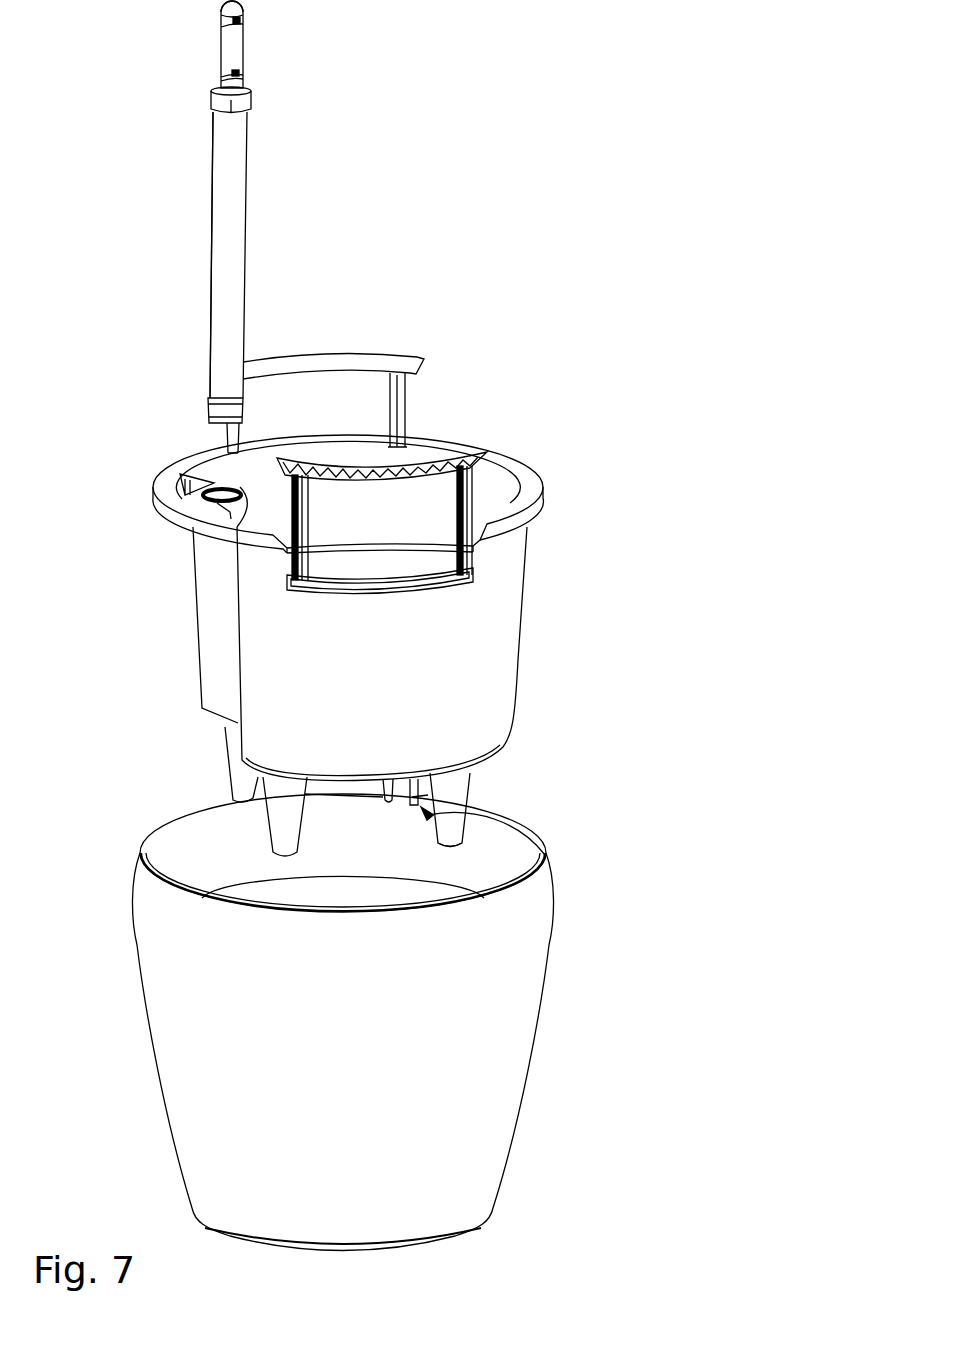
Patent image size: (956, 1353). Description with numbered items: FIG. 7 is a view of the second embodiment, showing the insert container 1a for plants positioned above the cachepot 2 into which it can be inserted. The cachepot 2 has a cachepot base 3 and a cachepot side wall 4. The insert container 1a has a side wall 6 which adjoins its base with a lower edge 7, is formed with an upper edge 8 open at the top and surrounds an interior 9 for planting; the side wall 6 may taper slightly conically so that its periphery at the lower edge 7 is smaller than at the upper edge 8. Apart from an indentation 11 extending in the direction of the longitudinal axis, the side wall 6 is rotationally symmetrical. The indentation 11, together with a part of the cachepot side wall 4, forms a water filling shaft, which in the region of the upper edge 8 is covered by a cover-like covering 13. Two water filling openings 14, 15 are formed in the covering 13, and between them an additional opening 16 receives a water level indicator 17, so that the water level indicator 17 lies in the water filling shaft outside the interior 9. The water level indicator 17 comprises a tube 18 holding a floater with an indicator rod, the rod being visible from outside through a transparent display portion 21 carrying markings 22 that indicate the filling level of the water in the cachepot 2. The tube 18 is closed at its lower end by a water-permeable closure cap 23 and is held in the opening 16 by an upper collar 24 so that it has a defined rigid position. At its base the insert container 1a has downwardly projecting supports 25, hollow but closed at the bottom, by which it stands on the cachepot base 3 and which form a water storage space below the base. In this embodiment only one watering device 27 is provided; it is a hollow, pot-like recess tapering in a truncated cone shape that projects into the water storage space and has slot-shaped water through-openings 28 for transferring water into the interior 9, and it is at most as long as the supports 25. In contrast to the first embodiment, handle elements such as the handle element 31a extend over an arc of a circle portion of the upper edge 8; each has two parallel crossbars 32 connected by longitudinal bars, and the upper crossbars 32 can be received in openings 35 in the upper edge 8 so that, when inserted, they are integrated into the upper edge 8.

The plant container insert 1a is at (446, 458).
The cachepot 2 is at (420, 1026).
The cachepot base 3 is at (417, 1247).
The cachepot side wall 4 is at (500, 1103).
The side wall 6 is at (507, 642).
The lower edge 7 is at (485, 770).
The upper edge 8 is at (414, 520).
The interior 9 is at (500, 491).
The indentation 11 is at (205, 622).
The covering 13 is at (185, 498).
The water filling opening 14 is at (178, 483).
The water filling opening 15 is at (203, 505).
The opening 16 is at (225, 503).
The water level indicator 17 is at (238, 175).
The tube 18 is at (218, 228).
The display portion 21 is at (237, 43).
The markings 22 is at (220, 40).
The closure cap 23 is at (218, 407).
The upper collar 24 is at (240, 105).
The supports 25 is at (270, 788).
The watering device 27 is at (460, 840).
The water through-openings 28 is at (430, 790).
The handle bracket 31a is at (318, 352).
The crossbars 32 is at (387, 585).
The openings 35 is at (350, 430).